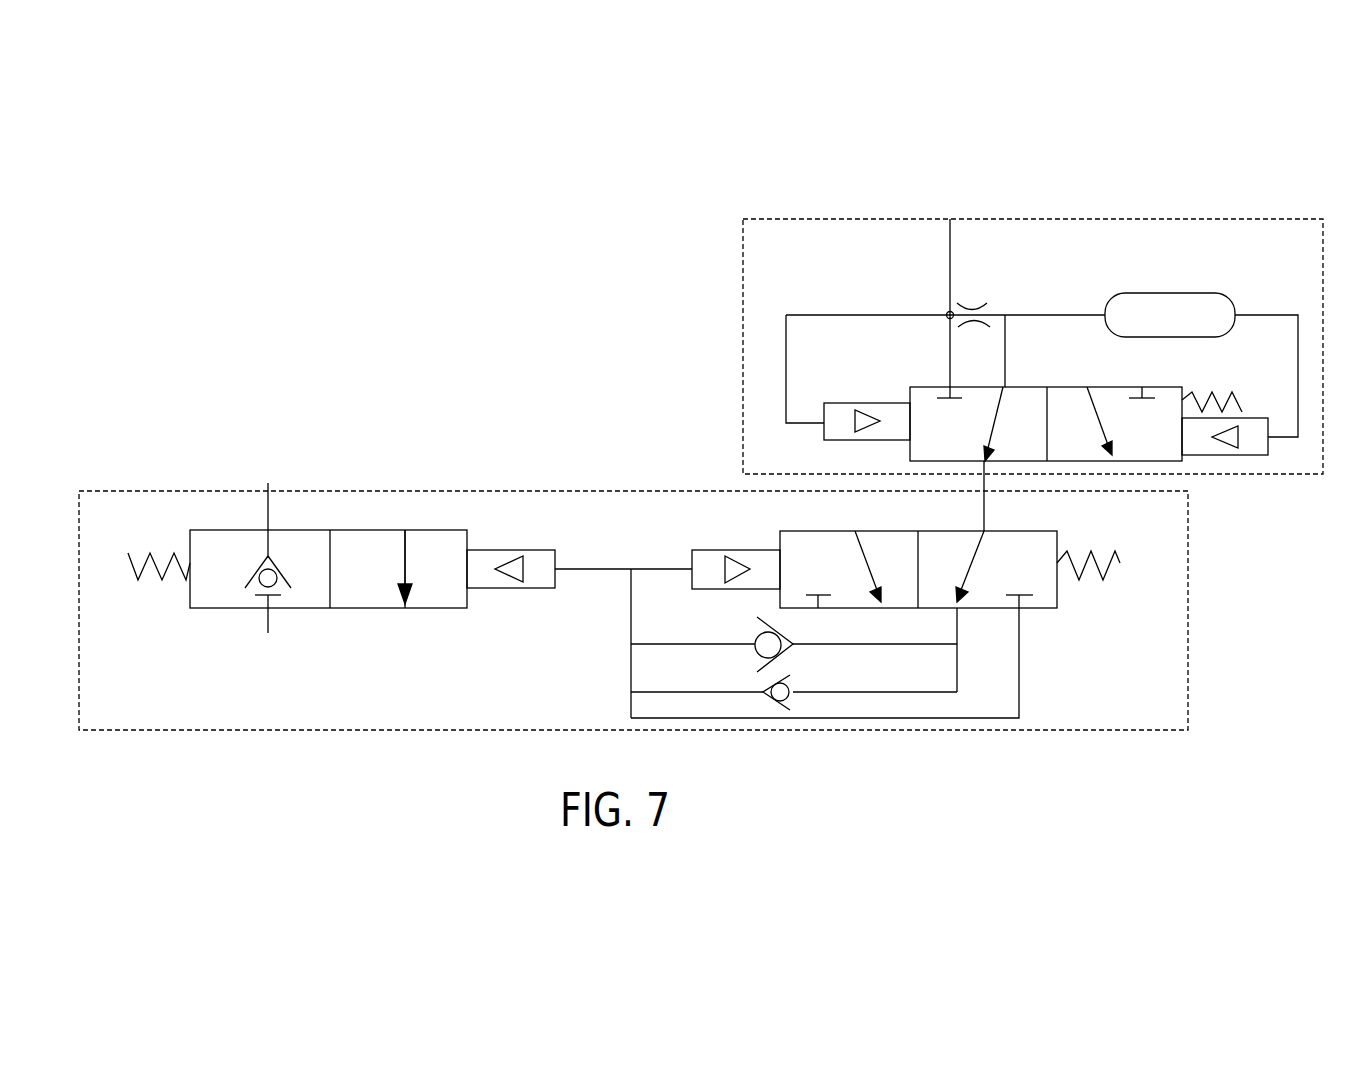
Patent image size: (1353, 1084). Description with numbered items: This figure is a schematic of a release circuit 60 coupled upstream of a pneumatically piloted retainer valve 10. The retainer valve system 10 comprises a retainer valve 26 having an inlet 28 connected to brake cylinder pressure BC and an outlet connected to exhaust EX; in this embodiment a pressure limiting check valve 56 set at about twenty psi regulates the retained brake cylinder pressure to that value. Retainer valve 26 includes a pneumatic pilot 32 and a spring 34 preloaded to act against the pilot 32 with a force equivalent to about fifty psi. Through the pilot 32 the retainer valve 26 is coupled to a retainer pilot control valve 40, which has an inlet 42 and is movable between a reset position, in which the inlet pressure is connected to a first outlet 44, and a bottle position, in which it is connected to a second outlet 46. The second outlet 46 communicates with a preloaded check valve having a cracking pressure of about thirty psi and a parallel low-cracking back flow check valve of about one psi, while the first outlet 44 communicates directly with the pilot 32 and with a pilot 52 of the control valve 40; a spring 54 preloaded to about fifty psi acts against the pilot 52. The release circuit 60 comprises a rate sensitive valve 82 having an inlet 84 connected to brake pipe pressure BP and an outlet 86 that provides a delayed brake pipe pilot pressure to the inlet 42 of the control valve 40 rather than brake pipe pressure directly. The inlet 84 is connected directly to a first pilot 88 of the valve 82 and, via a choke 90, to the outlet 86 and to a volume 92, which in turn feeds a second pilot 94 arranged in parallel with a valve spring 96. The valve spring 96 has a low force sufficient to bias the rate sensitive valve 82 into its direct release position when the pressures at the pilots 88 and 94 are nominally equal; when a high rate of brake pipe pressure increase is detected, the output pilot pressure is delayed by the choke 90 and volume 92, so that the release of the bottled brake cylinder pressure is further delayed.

The pneumatically piloted retainer valve 10 is at (1188, 568).
The retainer valve 26 is at (385, 530).
The inlet 28 is at (272, 522).
The pneumatic pilot 32 is at (492, 590).
The spring 34 is at (150, 548).
The retainer pilot control valve 40 is at (830, 531).
The inlet 42 is at (985, 525).
The first outlet 44 is at (1019, 652).
The second outlet 46 is at (958, 622).
The pilot 52 is at (750, 550).
The spring 54 is at (1100, 556).
The pressure limiting check valve 56 is at (258, 560).
The release circuit 60 is at (1200, 218).
The rate sensitive valve 82 is at (1157, 458).
The inlet 84 is at (949, 277).
The outlet 86 is at (987, 461).
The first pilot 88 is at (850, 403).
The choke 90 is at (978, 303).
The volume 92 is at (1198, 292).
The second pilot 94 is at (1252, 457).
The valve spring 96 is at (1238, 398).